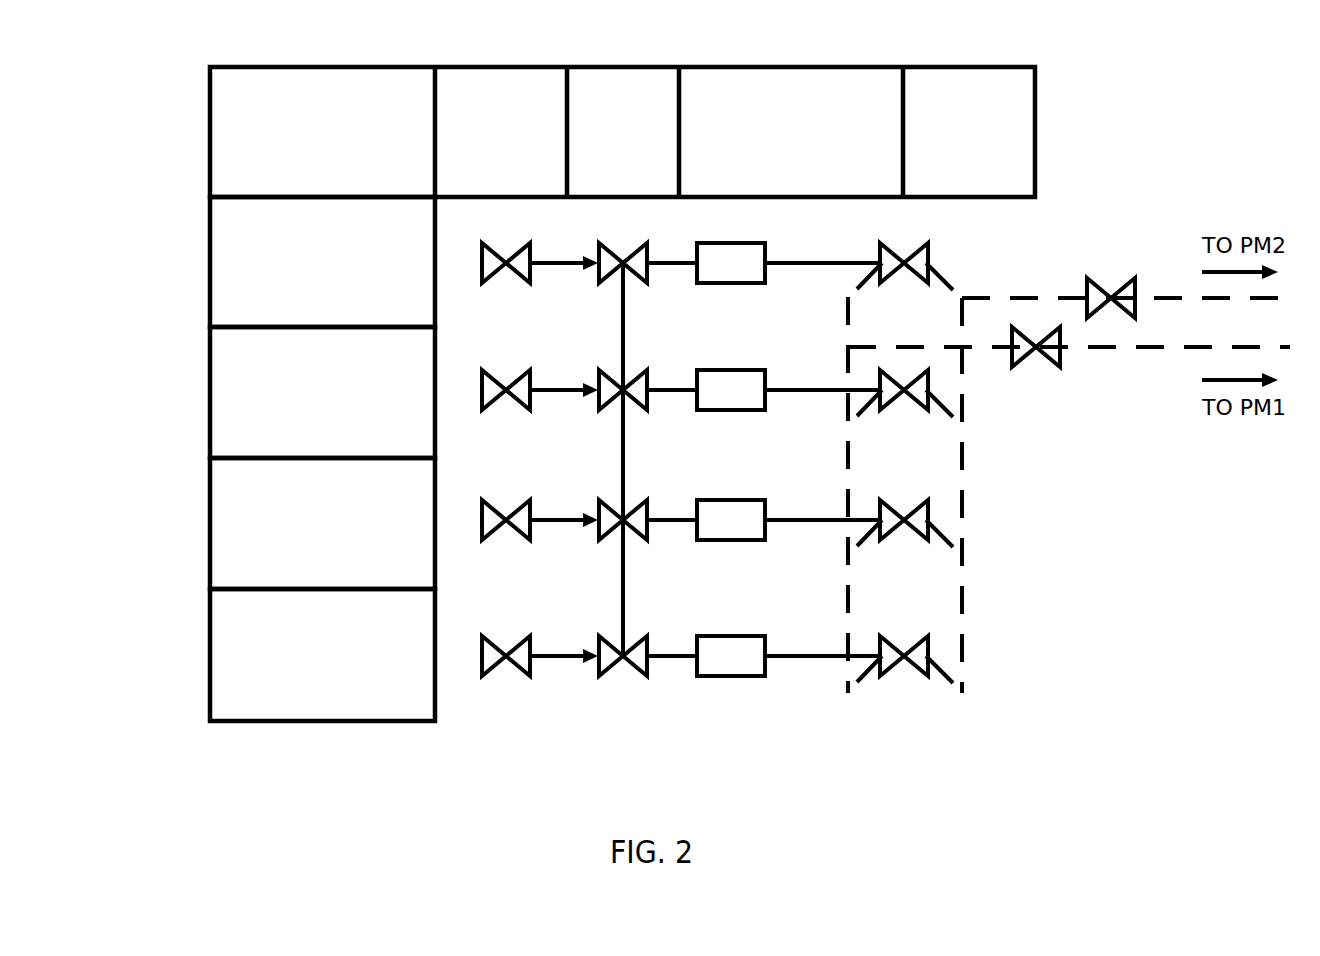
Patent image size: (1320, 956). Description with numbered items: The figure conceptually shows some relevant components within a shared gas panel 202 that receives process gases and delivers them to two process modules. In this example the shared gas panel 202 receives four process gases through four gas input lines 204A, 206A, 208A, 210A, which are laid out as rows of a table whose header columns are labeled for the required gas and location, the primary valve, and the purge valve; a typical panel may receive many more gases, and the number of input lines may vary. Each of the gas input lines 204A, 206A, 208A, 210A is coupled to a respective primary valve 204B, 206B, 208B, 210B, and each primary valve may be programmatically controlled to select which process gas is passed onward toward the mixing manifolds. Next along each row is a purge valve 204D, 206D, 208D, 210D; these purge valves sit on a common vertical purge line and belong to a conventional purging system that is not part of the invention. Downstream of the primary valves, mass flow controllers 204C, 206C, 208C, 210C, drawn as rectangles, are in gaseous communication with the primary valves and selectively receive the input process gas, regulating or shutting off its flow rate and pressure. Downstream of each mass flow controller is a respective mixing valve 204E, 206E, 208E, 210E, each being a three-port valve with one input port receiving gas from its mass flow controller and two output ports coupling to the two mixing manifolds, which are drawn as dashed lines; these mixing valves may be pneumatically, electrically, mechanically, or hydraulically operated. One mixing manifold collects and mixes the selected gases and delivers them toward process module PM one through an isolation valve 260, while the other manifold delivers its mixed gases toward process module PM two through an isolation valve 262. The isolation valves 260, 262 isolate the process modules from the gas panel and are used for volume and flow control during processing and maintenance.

The shared gas panel 202 is at (111, 60).
The gas input line 204A is at (210, 262).
The primary valve 204B is at (514, 271).
The mass flow controller 204C is at (745, 283).
The purge valve 204D is at (648, 260).
The mixing valve 204E is at (912, 271).
The gas input line 206A is at (210, 389).
The primary valve 206B is at (514, 398).
The mass flow controller 206C is at (745, 410).
The purge valve 206D is at (648, 387).
The mixing valve 206E is at (912, 398).
The gas input line 208A is at (210, 525).
The primary valve 208B is at (514, 528).
The mass flow controller 208C is at (745, 540).
The purge valve 208D is at (648, 517).
The mixing valve 208E is at (912, 528).
The gas input line 210A is at (210, 657).
The primary valve 210B is at (514, 664).
The mass flow controller 210C is at (745, 676).
The purge valve 210D is at (648, 653).
The mixing valve 210E is at (912, 664).
The isolation valve 260 is at (1040, 355).
The isolation valve 262 is at (1116, 292).